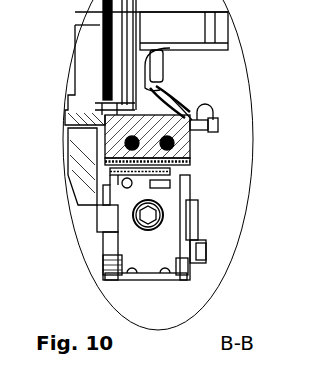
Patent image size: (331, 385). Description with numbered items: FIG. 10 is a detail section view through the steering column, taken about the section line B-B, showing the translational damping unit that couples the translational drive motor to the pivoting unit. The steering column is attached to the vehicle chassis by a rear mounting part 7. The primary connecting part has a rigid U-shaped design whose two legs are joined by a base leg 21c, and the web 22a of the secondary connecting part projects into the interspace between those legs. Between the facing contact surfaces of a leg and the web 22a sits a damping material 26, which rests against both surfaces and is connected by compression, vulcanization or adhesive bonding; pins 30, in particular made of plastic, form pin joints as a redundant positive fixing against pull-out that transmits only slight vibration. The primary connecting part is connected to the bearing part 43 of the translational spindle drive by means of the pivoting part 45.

The damping material 26 is at (324, 3).
The rear mounting part 7 is at (215, 22).
The web 22a is at (196, 127).
The pin 30 is at (190, 172).
The base leg 21c is at (190, 178).
The pivoting part 45 is at (198, 212).
The bearing part 43 is at (142, 240).